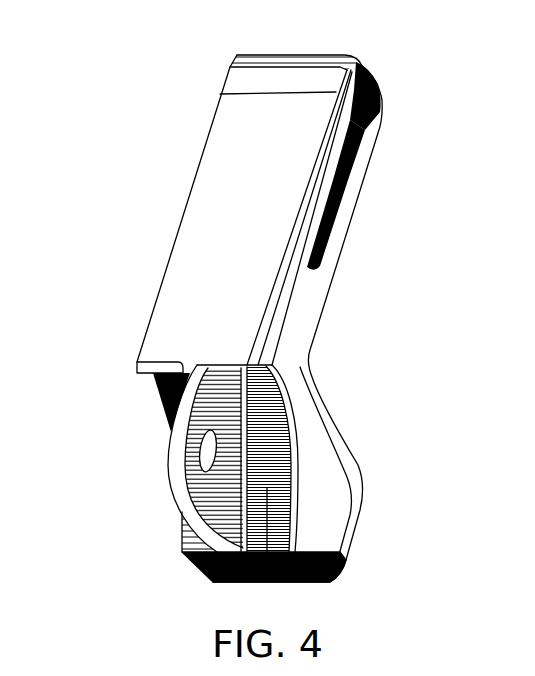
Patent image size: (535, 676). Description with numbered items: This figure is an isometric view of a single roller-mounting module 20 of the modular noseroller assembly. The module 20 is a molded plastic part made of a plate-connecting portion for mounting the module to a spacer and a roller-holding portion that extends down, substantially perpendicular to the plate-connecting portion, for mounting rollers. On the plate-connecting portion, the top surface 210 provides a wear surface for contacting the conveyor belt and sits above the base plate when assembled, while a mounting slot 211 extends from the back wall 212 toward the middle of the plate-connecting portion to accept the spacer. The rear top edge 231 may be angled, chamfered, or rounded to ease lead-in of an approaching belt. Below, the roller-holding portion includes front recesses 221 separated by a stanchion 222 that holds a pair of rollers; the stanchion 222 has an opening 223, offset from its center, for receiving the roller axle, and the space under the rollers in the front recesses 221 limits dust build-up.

The roller-mounting module 20 is at (118, 235).
The top surface 210 is at (227, 190).
The mounting slot 211 is at (357, 145).
The back wall 212 is at (363, 62).
The rear top edge 231 is at (235, 70).
The front recesses 221 is at (152, 405).
The stanchion 222 is at (182, 498).
The opening 223 is at (211, 452).